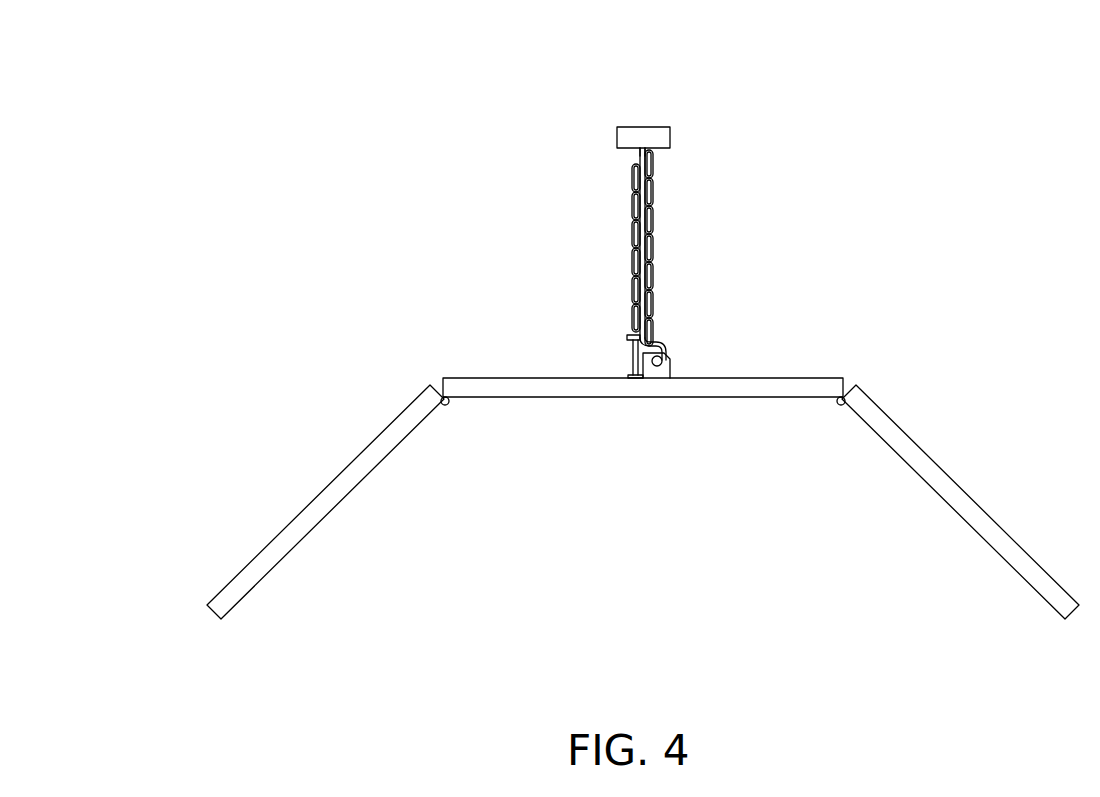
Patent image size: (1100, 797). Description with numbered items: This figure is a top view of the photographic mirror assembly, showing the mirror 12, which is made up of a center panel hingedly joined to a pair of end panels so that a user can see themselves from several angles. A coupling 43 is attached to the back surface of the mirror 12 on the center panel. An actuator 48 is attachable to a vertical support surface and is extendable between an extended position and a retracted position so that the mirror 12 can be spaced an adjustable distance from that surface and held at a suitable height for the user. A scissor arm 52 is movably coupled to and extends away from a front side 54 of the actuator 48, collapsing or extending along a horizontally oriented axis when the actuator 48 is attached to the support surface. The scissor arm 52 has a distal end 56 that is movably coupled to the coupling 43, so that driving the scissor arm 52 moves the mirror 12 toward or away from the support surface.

The mirror 12 is at (385, 362).
The coupling 43 is at (670, 357).
The actuator 48 is at (670, 137).
The scissor arm 52 is at (582, 249).
The front side 54 is at (662, 152).
The distal end 56 is at (630, 348).